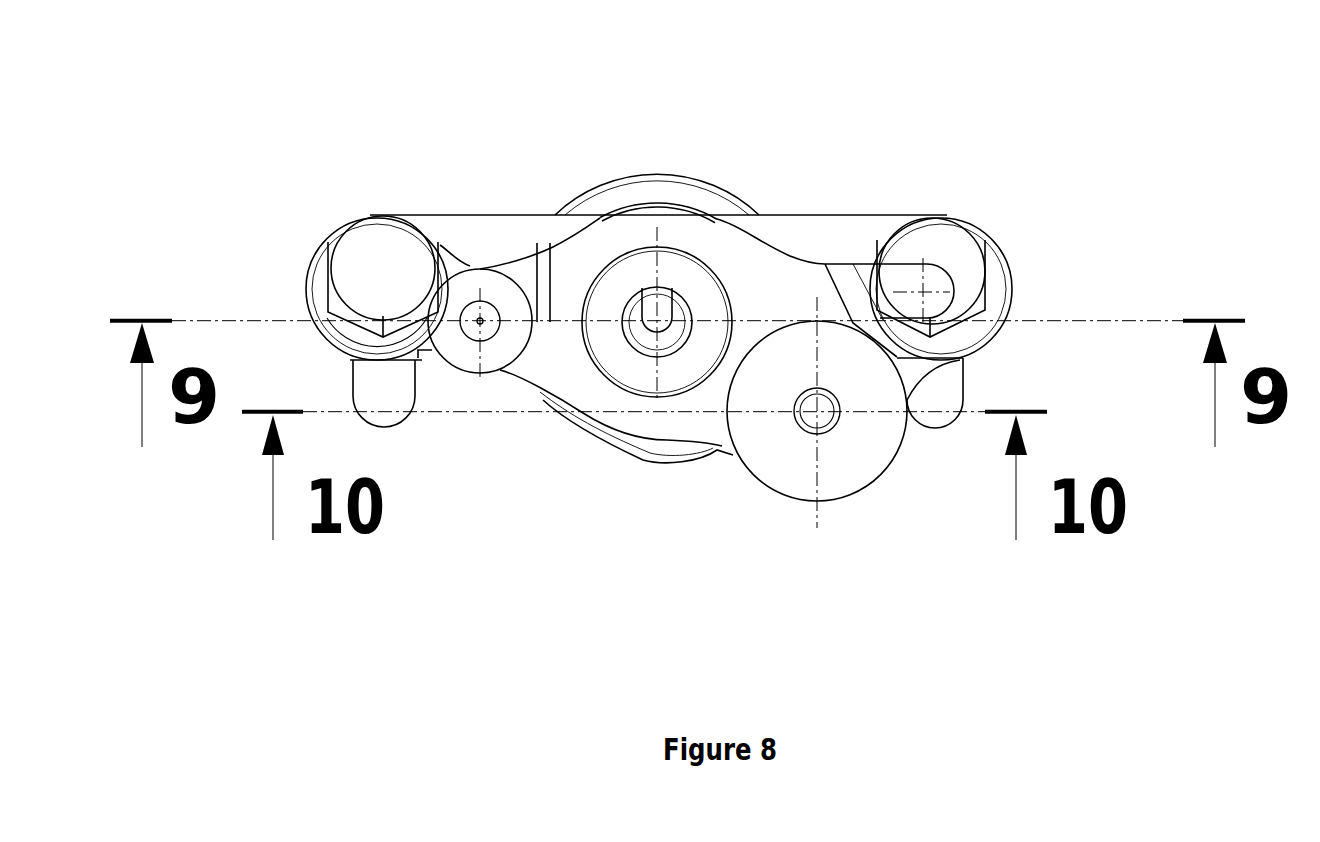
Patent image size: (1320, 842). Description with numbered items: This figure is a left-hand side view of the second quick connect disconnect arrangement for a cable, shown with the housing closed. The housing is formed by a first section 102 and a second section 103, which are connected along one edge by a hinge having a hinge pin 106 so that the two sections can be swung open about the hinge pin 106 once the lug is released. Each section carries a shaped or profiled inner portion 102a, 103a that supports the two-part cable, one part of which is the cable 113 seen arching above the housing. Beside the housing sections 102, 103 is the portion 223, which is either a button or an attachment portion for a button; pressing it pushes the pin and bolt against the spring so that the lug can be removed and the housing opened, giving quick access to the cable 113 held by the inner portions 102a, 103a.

The first section 102 is at (762, 270).
The shaped or profiled inner portion 102a is at (635, 268).
The second section 103 is at (646, 420).
The shaped or profiled inner portion 103a is at (625, 355).
The hinge pin 106 is at (487, 305).
The cable 113 is at (675, 198).
The portion 223 is at (777, 460).